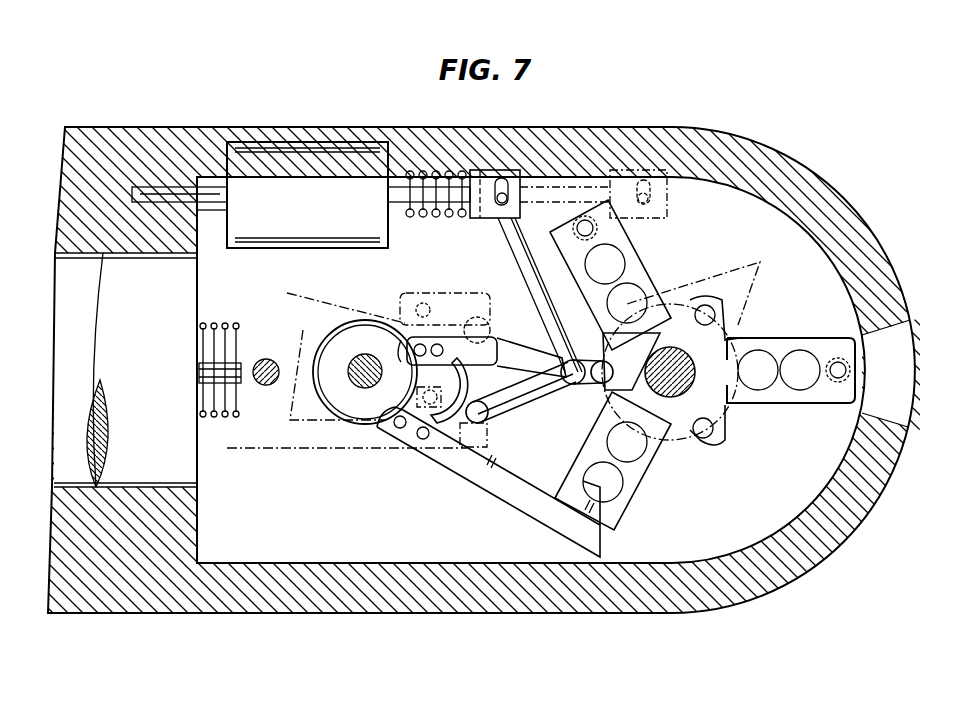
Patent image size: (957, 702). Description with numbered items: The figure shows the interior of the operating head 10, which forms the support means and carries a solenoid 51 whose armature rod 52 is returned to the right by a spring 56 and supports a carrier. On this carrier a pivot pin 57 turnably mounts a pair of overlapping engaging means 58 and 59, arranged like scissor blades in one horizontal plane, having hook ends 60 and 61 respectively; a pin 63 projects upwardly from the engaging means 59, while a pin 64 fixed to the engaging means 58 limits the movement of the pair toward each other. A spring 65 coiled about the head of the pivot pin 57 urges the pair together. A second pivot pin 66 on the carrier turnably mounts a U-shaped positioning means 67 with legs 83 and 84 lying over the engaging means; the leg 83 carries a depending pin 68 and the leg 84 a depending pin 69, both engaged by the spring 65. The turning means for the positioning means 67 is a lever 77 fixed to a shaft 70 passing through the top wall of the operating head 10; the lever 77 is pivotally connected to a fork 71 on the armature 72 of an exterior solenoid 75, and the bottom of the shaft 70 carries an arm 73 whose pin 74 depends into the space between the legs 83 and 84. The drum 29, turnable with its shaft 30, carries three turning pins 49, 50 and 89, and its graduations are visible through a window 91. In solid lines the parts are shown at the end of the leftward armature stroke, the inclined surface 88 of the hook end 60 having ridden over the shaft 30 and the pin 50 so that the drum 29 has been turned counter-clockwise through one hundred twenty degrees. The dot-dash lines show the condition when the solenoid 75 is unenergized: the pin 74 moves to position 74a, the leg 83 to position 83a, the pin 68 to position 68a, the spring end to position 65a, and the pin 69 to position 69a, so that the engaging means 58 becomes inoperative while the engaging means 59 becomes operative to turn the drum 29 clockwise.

The operating head 10 is at (887, 288).
The window 91 is at (902, 353).
The solenoid 51 is at (173, 281).
The positioning means 67 is at (247, 322).
The spring 56 is at (211, 418).
The armature rod 52 is at (216, 373).
The pivot pin 66 is at (266, 386).
The solenoid 75 is at (330, 141).
The armature 72 is at (424, 196).
The lever 77 is at (544, 304).
The pivot pin 57 is at (359, 386).
The position of pin 69 69a is at (414, 397).
The pin 68 is at (452, 351).
The fork 71 is at (423, 343).
The spring 65 is at (459, 337).
The engaging means 58 is at (508, 338).
The position of pin 68 68a is at (445, 298).
The position of leg 83 83a is at (400, 306).
The position of pin 74 74a is at (490, 322).
The position of spring end 65a is at (413, 293).
The leg 83 is at (297, 296).
The leg 84 is at (307, 449).
The pin 64 is at (467, 398).
The arm 73 is at (515, 405).
The pin 74 is at (474, 424).
The shaft 70 is at (560, 388).
The turning pin 50 is at (597, 384).
The engaging means 59 is at (540, 508).
The pin 63 is at (397, 429).
The pin 69 is at (423, 440).
The hook end 61 is at (578, 484).
The hook end 60 is at (618, 382).
The shaft 30 is at (687, 364).
The inclined surface 88 is at (760, 300).
The turning pin 49 is at (715, 315).
The turning pin 89 is at (713, 430).
The drum 29 is at (776, 348).